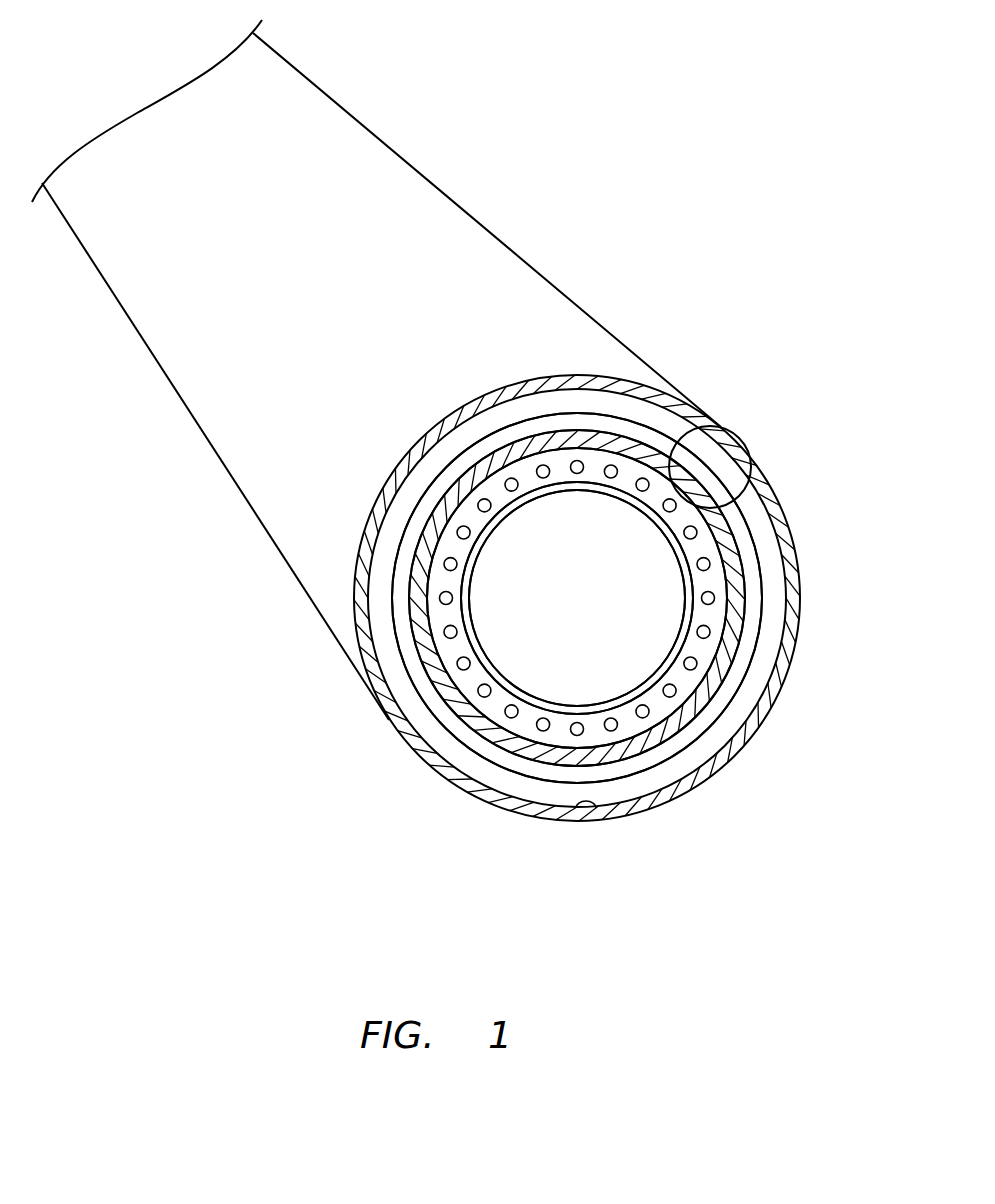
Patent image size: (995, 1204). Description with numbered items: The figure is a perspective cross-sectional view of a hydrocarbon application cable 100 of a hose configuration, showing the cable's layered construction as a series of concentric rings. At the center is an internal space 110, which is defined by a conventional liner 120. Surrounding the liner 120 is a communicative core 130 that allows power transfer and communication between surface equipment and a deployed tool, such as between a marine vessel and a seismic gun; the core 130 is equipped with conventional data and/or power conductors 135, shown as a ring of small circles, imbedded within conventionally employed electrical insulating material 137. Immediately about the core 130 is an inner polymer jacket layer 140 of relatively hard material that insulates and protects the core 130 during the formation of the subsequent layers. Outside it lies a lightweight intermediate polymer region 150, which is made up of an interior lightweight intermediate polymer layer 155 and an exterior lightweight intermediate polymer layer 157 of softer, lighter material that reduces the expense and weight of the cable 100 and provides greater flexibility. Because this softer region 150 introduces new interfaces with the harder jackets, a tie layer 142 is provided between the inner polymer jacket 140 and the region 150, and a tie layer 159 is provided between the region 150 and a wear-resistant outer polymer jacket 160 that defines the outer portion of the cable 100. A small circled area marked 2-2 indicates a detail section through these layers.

The cable assembly 100 is at (655, 178).
The central lumen 110 is at (599, 610).
The inner tube 120 is at (653, 690).
The strand layer 130 is at (437, 585).
The strands 135 is at (712, 562).
The annular gap 137 is at (707, 647).
The inner sheath layer 140 is at (632, 447).
The outer surface of inner sheath 142 is at (750, 598).
The outer sheath layer 150 is at (667, 792).
The first annular space 155 is at (503, 757).
The second annular space 157 is at (743, 713).
The rib 159 is at (574, 804).
The outer jacket 160 is at (283, 532).
The section line 2-2 is at (740, 437).